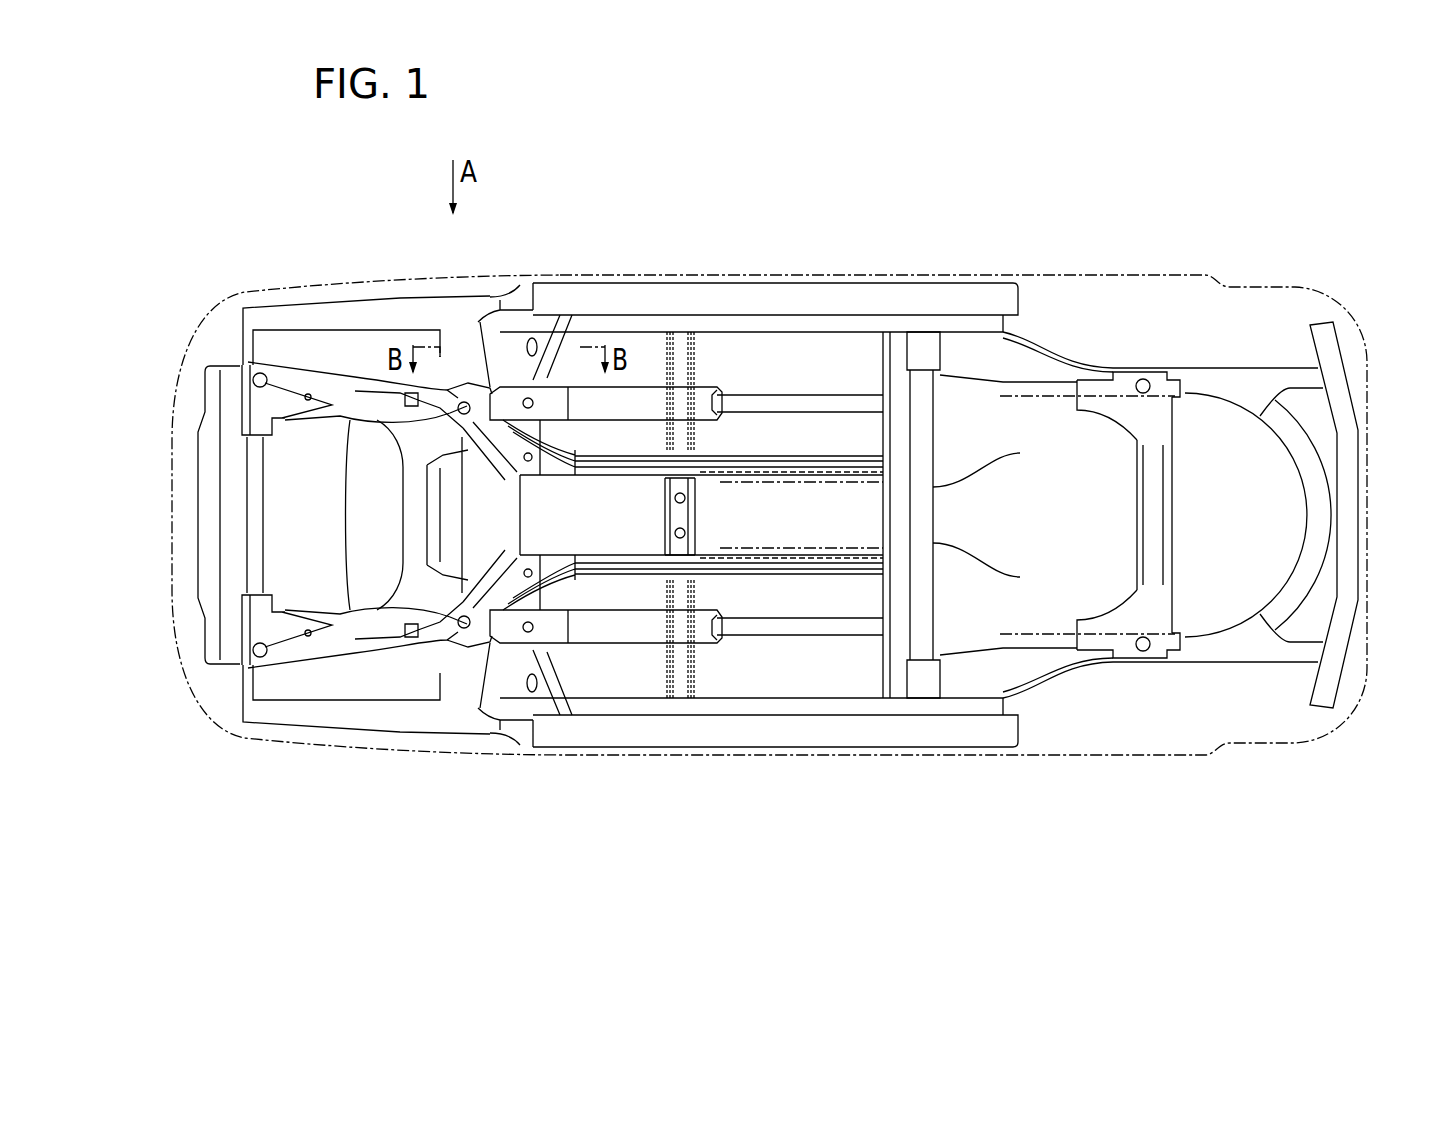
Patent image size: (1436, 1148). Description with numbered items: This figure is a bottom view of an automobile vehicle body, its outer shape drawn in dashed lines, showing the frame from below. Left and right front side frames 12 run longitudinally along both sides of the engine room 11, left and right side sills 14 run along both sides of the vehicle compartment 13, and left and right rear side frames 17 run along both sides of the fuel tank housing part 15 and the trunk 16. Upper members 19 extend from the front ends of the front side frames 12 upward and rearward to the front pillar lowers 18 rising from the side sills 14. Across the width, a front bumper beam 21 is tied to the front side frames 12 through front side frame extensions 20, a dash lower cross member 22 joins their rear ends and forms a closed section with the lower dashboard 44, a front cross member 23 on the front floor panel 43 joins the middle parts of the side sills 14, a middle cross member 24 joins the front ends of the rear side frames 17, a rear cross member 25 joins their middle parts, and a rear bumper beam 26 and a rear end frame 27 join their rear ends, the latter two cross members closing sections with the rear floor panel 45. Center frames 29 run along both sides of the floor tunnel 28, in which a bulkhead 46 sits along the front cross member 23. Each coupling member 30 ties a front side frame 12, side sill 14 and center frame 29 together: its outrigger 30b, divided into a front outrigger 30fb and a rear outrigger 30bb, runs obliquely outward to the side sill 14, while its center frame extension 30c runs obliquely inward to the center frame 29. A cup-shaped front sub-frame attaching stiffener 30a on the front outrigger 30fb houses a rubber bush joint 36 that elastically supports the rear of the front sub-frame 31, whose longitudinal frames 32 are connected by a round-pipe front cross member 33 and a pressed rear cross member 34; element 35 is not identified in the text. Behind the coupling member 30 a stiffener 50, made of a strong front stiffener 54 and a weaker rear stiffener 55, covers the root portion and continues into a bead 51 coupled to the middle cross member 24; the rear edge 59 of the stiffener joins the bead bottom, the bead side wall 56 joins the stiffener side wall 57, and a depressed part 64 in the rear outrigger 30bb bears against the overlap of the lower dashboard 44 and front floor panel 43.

The engine room 11 is at (335, 515).
The front side frame 12 is at (347, 330).
The vehicle compartment 13 is at (851, 455).
The side sill 14 is at (878, 297).
The fuel tank housing part 15 is at (1051, 525).
The trunk 16 is at (1243, 515).
The rear side frame 17 is at (1018, 362).
The front pillar lower 18 is at (517, 296).
The upper member 19 is at (383, 300).
The front side frame extension 20 is at (243, 372).
The front bumper beam 21 is at (213, 623).
The dash lower cross member 22 is at (460, 517).
The front cross member 23 is at (745, 332).
The middle cross member 24 is at (920, 442).
The rear cross member 25 is at (1137, 545).
The rear bumper beam 26 is at (1358, 490).
The rear end frame 27 is at (1303, 563).
The floor tunnel 28 is at (897, 515).
The center frame 29 is at (730, 468).
The coupling member 30 is at (555, 366).
The front sub-frame attaching stiffener 30a is at (460, 400).
The outrigger 30b is at (548, 549).
The front outrigger 30fb is at (480, 370).
The rear outrigger 30bb is at (532, 340).
The center frame extension 30c is at (545, 452).
The front sub-frame 31 is at (266, 520).
The longitudinal frame 32 is at (345, 418).
The front cross member 33 is at (255, 490).
The rear cross member 34 is at (420, 495).
The bumper bracket 35 is at (290, 366).
The rubber bush joint 36 is at (478, 440).
The front floor panel 43 is at (890, 592).
The lower dashboard 44 is at (452, 370).
The rear floor panel 45 is at (1005, 710).
The bulkhead 46 is at (697, 515).
The stiffener 50 is at (702, 528).
The bead 51 is at (810, 393).
The front stiffener 54 is at (668, 335).
The rear stiffener 55 is at (690, 335).
The side wall 56 is at (770, 394).
The side wall 57 is at (637, 386).
The rear edge 59 is at (722, 400).
The depressed part 64 is at (527, 352).